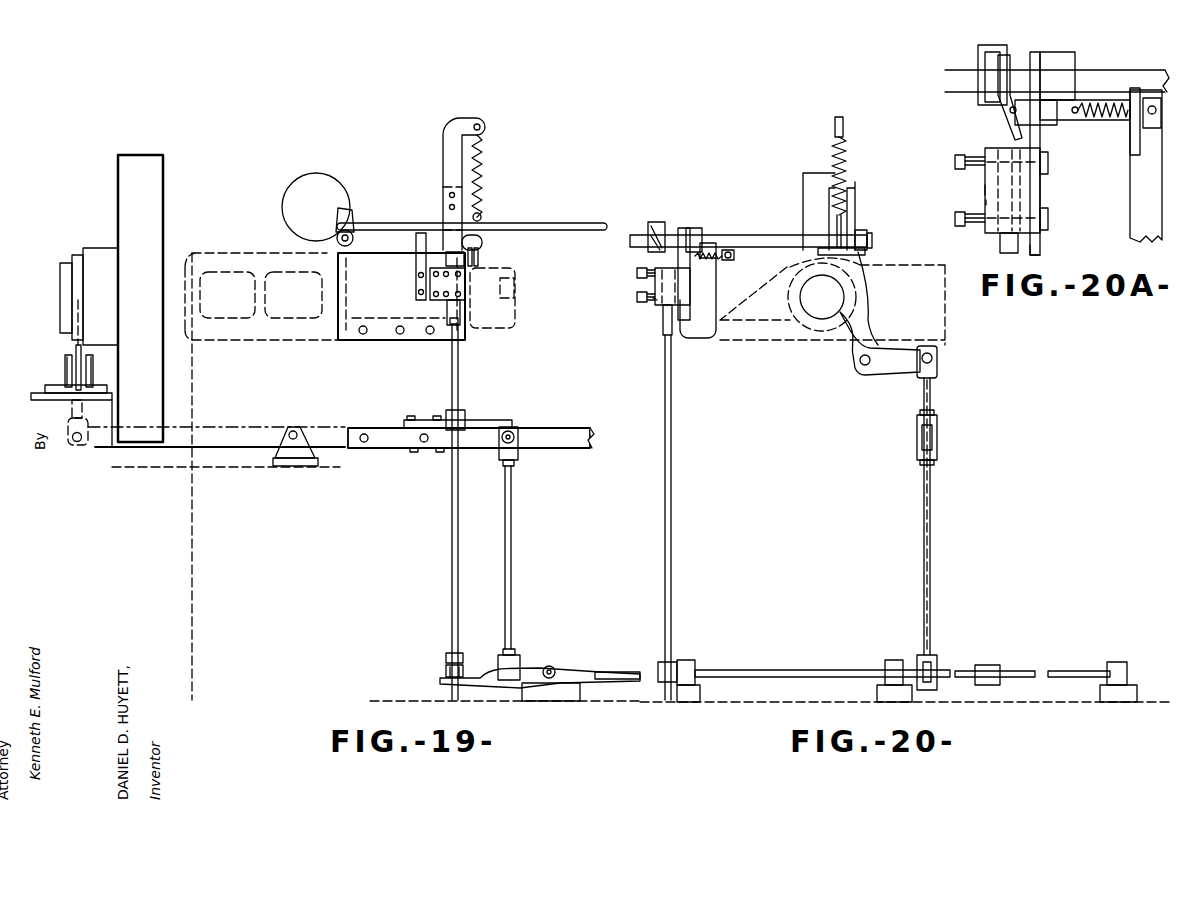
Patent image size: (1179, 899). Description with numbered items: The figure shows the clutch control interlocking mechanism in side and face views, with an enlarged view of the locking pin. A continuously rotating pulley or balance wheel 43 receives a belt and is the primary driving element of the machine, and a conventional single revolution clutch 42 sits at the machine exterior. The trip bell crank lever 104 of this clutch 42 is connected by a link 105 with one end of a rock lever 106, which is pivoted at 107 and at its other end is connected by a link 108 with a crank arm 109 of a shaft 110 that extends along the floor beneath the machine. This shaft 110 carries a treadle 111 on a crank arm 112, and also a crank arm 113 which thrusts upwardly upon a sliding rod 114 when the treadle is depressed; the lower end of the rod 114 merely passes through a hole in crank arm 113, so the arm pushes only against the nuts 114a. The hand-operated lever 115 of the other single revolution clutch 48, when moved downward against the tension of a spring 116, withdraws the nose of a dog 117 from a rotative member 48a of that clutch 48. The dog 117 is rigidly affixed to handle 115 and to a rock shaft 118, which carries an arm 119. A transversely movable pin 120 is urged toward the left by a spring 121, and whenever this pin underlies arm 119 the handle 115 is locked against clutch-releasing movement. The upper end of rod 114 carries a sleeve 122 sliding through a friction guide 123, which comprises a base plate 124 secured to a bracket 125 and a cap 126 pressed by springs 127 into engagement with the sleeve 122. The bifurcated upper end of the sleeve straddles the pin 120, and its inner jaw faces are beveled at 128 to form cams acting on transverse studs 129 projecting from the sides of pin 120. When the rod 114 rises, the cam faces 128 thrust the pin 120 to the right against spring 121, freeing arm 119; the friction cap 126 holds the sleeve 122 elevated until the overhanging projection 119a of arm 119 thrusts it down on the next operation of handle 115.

In FIG. 19, the single revolution clutch 42 is at (78, 276).
In FIG. 19, the pulley or balance wheel 43 is at (128, 206).
In FIG. 20, the single revolution clutch 48 is at (806, 182).
In FIG. 19, the rotative member 48a is at (330, 185).
In FIG. 19, the trip bell crank lever 104 is at (78, 341).
In FIG. 20, the trip bell crank lever 104 is at (882, 370).
In FIG. 19, the link 105 is at (75, 408).
In FIG. 20, the link 105 is at (932, 395).
In FIG. 19, the rock lever 106 is at (180, 448).
In FIG. 20, the rock lever 106 is at (938, 433).
In FIG. 19, the pivot 107 is at (295, 430).
In FIG. 19, the link 108 is at (512, 526).
In FIG. 19, the crank arm 109 is at (515, 660).
In FIG. 20, the crank arm 109 is at (938, 664).
In FIG. 19, the shaft 110 is at (556, 668).
In FIG. 20, the shaft 110 is at (821, 670).
In FIG. 19, the treadle 111 is at (630, 672).
In FIG. 20, the treadle 111 is at (1000, 672).
In FIG. 19, the crank arm 112 is at (582, 686).
In FIG. 19, the crank arm 113 is at (465, 676).
In FIG. 19, the sliding rod 114 is at (452, 600).
In FIG. 20, the sliding rod 114 is at (667, 517).
In FIG. 19, the nuts 114a is at (446, 660).
In FIG. 19, the hand-operated lever 115 is at (562, 216).
In FIG. 20, the hand-operated lever 115 is at (870, 228).
In FIG. 19, the spring 116 is at (482, 176).
In FIG. 20, the spring 116 is at (846, 160).
In FIG. 19, the dog 117 is at (352, 213).
In FIG. 19, the rock shaft 118 is at (338, 242).
In FIG. 20, the rock shaft 118 is at (792, 235).
In FIG. 20A, the rock shaft 118 is at (1118, 70).
In FIG. 19, the arm 119 is at (482, 240).
In FIG. 20, the arm 119 is at (660, 224).
In FIG. 20A, the arm 119 is at (990, 62).
In FIG. 19, the overhanging projection 119a is at (450, 215).
In FIG. 20A, the overhanging projection 119a is at (1005, 50).
In FIG. 19, the pin 120 is at (466, 262).
In FIG. 20, the pin 120 is at (722, 257).
In FIG. 20A, the pin 120 is at (1008, 112).
In FIG. 20, the spring 121 is at (718, 266).
In FIG. 20A, the spring 121 is at (1104, 120).
In FIG. 19, the sleeve 122 is at (447, 306).
In FIG. 20, the sleeve 122 is at (664, 320).
In FIG. 20A, the sleeve 122 is at (1000, 248).
In FIG. 20A, the friction guide 123 is at (978, 205).
In FIG. 20, the base plate 124 is at (688, 290).
In FIG. 20A, the base plate 124 is at (1025, 196).
In FIG. 20, the bracket 125 is at (699, 298).
In FIG. 20A, the bracket 125 is at (1040, 248).
In FIG. 19, the cap 126 is at (458, 284).
In FIG. 20, the cap 126 is at (653, 300).
In FIG. 20A, the cap 126 is at (986, 188).
In FIG. 20, the springs 127 is at (640, 268).
In FIG. 20A, the springs 127 is at (966, 154).
In FIG. 20, the beveled cam faces 128 is at (693, 236).
In FIG. 20A, the beveled cam faces 128 is at (1022, 128).
In FIG. 19, the transverse studs 129 is at (478, 250).
In FIG. 20, the transverse studs 129 is at (680, 240).
In FIG. 20A, the transverse studs 129 is at (1020, 98).